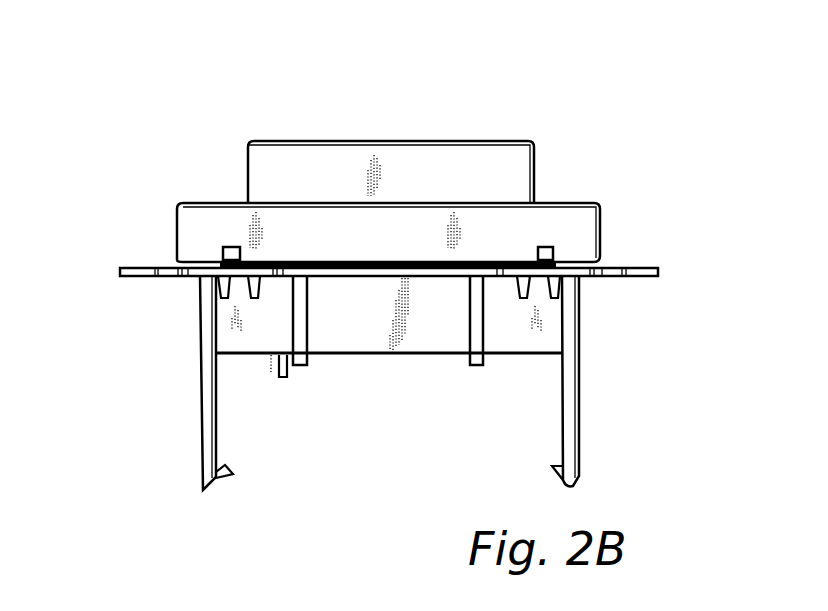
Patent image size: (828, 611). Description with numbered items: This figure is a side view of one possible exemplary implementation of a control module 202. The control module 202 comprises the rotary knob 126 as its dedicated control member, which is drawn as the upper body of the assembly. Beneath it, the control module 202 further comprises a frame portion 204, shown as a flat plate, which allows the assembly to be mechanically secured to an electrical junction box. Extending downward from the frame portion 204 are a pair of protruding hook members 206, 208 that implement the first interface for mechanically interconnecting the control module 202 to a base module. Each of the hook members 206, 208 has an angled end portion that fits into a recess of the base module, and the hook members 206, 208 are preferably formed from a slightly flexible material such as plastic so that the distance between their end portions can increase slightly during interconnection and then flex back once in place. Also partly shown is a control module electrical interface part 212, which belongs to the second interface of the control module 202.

The control module 202 is at (626, 122).
The rotary knob 126 is at (467, 163).
The frame portion 204 is at (120, 277).
The hook member 206 is at (201, 457).
The hook member 208 is at (577, 430).
The control module electrical interface part 212 is at (273, 386).